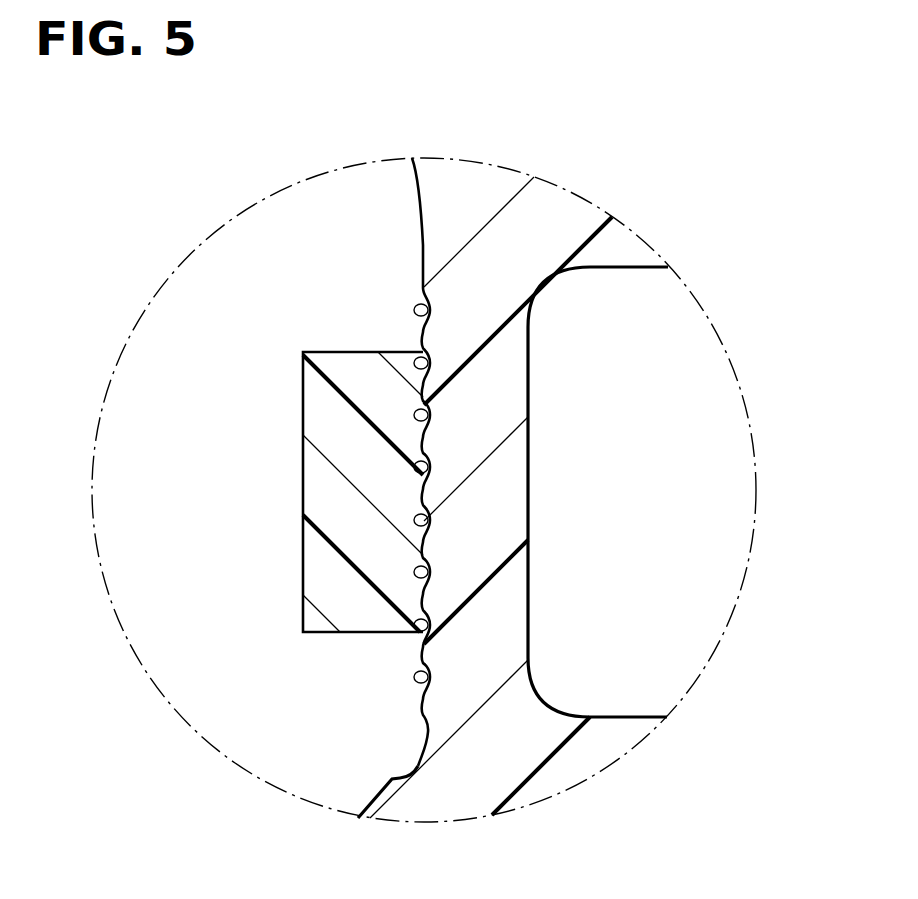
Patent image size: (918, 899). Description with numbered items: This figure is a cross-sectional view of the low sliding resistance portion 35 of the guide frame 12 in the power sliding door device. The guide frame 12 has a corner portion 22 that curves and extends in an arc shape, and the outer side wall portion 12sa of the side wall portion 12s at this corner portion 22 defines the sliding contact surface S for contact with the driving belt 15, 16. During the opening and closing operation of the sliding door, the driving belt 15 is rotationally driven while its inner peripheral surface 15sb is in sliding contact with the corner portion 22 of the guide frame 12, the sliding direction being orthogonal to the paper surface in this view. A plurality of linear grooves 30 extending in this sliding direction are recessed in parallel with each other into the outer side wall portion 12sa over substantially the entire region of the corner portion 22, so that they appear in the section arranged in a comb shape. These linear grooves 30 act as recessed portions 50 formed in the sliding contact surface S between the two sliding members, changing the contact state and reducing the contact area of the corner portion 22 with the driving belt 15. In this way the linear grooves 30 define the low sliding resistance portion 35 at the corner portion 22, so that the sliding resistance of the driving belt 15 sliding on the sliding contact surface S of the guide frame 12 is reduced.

The corner portion 22 is at (424, 465).
The sliding contact surface S is at (424, 465).
The low sliding resistance portion 35 is at (326, 244).
The guide frame 12 is at (485, 451).
The side wall portion 12s is at (485, 451).
The outer side wall portion 12sa is at (416, 184).
The linear grooves 30 is at (541, 492).
The recessed portions 50 is at (432, 686).
The driving belt 15 is at (296, 492).
The element 16 is at (303, 485).
The inner peripheral surface 15sb is at (423, 487).